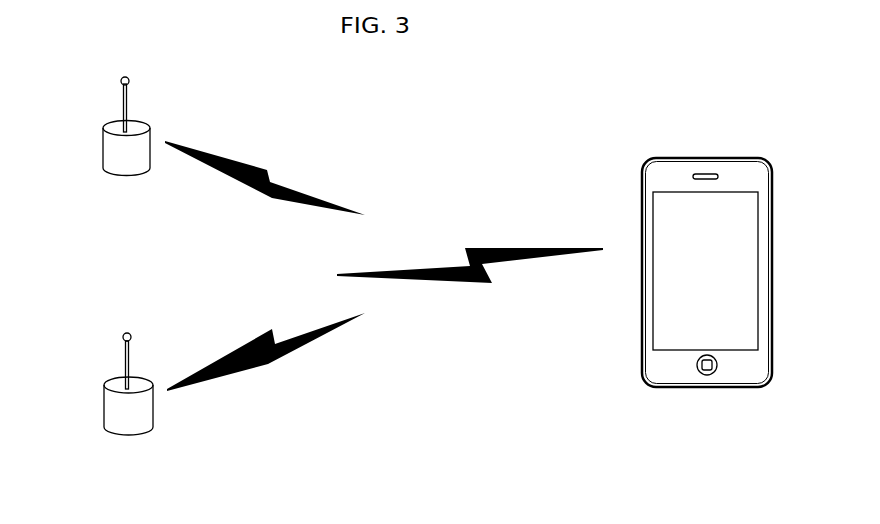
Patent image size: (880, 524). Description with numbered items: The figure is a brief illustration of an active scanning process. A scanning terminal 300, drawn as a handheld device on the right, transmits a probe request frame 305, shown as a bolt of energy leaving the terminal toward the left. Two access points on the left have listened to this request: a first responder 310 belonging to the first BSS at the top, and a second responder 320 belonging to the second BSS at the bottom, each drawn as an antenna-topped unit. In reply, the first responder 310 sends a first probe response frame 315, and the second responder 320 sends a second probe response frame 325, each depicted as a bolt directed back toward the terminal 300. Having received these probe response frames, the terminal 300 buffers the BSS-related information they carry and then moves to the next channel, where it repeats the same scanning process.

The terminal 300 is at (707, 388).
The probe request frame 305 is at (543, 218).
The responder 1 310 is at (105, 125).
The probe response frame 1 315 is at (375, 119).
The responder 2 320 is at (107, 382).
The probe response frame 2 325 is at (385, 404).